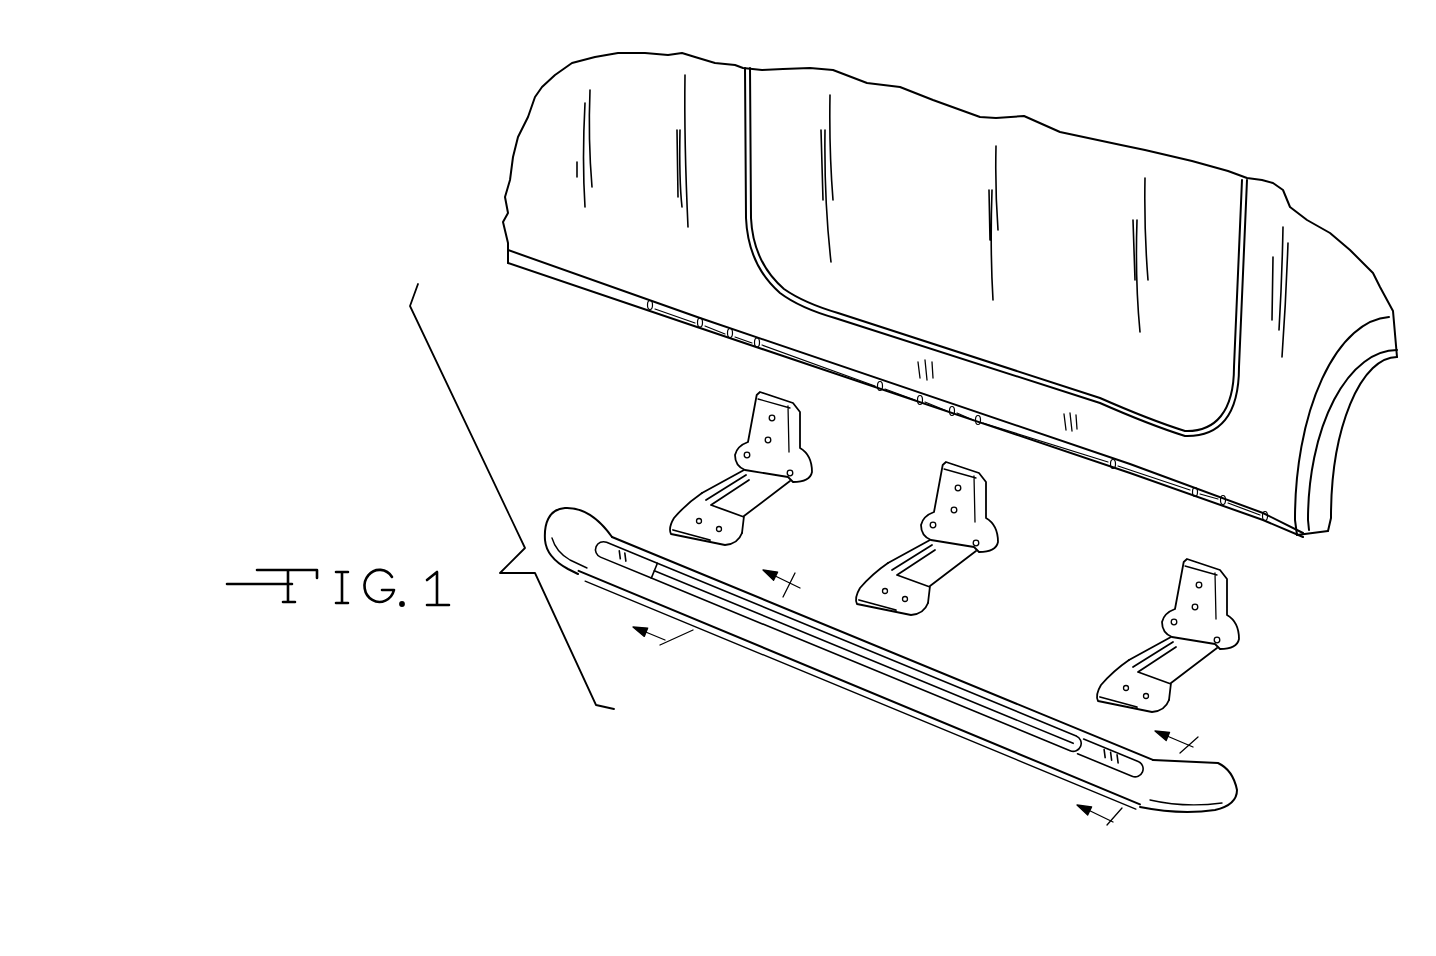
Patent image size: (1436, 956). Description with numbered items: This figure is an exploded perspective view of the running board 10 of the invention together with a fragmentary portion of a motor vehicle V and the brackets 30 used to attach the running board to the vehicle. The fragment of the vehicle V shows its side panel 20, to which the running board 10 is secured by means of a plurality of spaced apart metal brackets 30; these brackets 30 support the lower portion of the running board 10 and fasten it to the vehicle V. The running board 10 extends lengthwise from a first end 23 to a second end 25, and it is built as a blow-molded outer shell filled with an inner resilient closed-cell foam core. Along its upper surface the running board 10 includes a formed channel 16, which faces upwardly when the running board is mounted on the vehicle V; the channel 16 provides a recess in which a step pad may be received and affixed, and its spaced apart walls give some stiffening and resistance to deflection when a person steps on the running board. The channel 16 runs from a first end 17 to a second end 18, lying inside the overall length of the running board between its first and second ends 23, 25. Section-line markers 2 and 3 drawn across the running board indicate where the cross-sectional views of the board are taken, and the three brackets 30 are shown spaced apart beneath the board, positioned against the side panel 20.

The running board 10 is at (1249, 792).
The channel 16 is at (867, 658).
The first end 17 is at (625, 558).
The second end 18 is at (1112, 759).
The side panel 20 is at (648, 203).
The first end 23 is at (570, 508).
The second end 25 is at (1233, 772).
The brackets 30 is at (801, 428).
The motor vehicle V is at (1322, 276).
The section line 2- 2 is at (705, 599).
The section line 3- 3 is at (1142, 781).